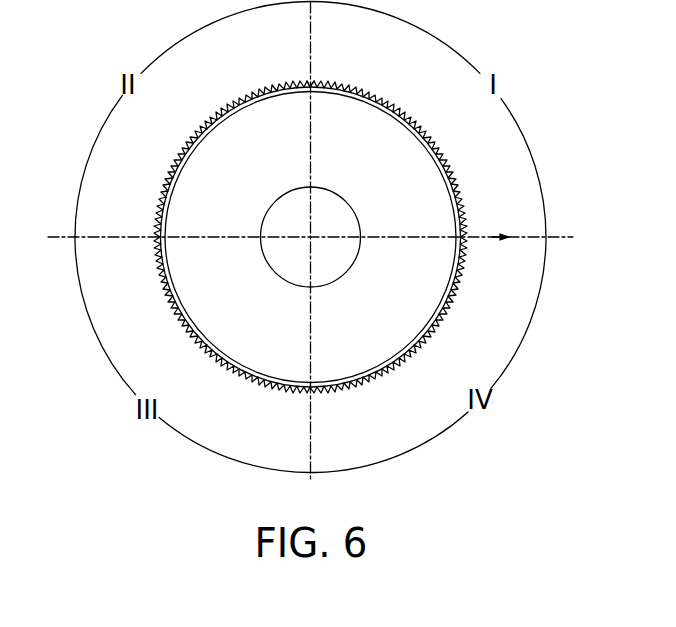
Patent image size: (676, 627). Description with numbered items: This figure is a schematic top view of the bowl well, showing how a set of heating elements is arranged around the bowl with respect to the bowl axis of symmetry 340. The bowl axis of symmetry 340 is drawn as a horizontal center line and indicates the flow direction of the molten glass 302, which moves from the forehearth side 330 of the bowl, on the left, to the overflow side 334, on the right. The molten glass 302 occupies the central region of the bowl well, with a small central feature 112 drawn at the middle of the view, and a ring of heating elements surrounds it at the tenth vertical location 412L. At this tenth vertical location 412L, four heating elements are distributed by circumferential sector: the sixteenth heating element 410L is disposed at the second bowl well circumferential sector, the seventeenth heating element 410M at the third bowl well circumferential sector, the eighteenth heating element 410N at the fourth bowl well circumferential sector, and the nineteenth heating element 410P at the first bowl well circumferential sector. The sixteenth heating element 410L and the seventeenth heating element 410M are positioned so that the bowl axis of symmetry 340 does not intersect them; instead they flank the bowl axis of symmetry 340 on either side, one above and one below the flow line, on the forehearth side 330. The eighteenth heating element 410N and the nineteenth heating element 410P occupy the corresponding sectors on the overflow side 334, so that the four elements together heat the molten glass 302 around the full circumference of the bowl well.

The forehearth side 330 is at (72, 56).
The overflow side 334 is at (513, 68).
The molten glass 302 is at (267, 333).
The central opening 112 is at (273, 270).
The sixteenth heating element 410L is at (218, 110).
The nineteenth heating element 410P is at (407, 112).
The eighteenth heating element 410N is at (432, 333).
The seventeenth heating element 410M is at (233, 373).
The tenth vertical location 412L is at (313, 80).
The bowl axis of symmetry 340 is at (492, 236).